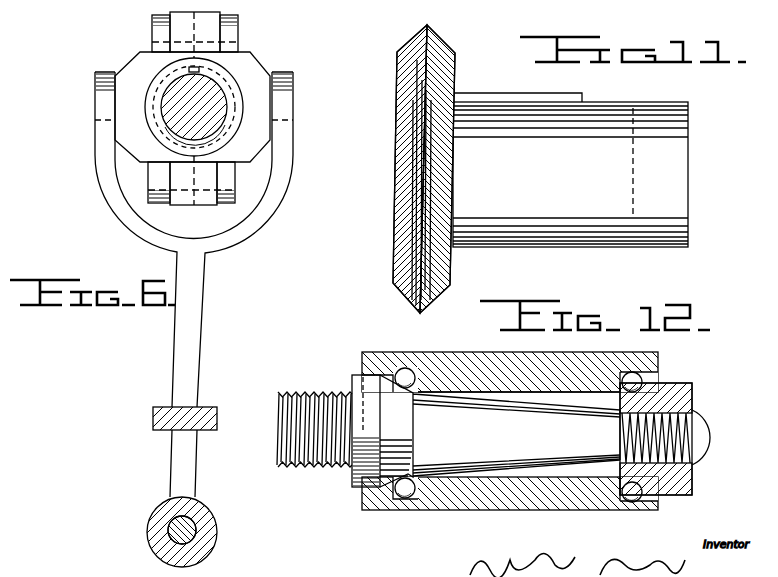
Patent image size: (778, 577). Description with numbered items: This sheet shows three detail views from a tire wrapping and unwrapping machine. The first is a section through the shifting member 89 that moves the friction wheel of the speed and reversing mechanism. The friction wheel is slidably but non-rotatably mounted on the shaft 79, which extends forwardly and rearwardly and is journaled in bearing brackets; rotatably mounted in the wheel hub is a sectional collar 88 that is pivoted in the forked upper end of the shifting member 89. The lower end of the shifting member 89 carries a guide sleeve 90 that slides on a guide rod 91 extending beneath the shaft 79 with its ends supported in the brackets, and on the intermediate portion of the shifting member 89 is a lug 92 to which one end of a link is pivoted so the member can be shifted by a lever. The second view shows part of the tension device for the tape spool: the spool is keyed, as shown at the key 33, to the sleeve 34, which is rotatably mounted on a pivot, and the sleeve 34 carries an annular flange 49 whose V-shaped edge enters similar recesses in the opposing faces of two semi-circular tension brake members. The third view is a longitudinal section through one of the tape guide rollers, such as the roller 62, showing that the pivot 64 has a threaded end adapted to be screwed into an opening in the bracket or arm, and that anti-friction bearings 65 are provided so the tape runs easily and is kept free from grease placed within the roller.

In FIG. 11, the key 33 is at (498, 96).
In FIG. 11, the sleeve 34 is at (566, 174).
In FIG. 11, the annular flange 49 is at (417, 132).
In FIG. 12, the roller 62 is at (497, 353).
In FIG. 12, the pivot 64 is at (448, 431).
In FIG. 12, the anti-friction bearings 65 is at (412, 370).
In FIG. 6, the shaft 79 is at (213, 87).
In FIG. 6, the sectional collar 88 is at (145, 62).
In FIG. 6, the shifting member 89 is at (193, 290).
In FIG. 6, the guide sleeve 90 is at (160, 510).
In FIG. 6, the guide rod 91 is at (168, 540).
In FIG. 6, the lug 92 is at (213, 405).